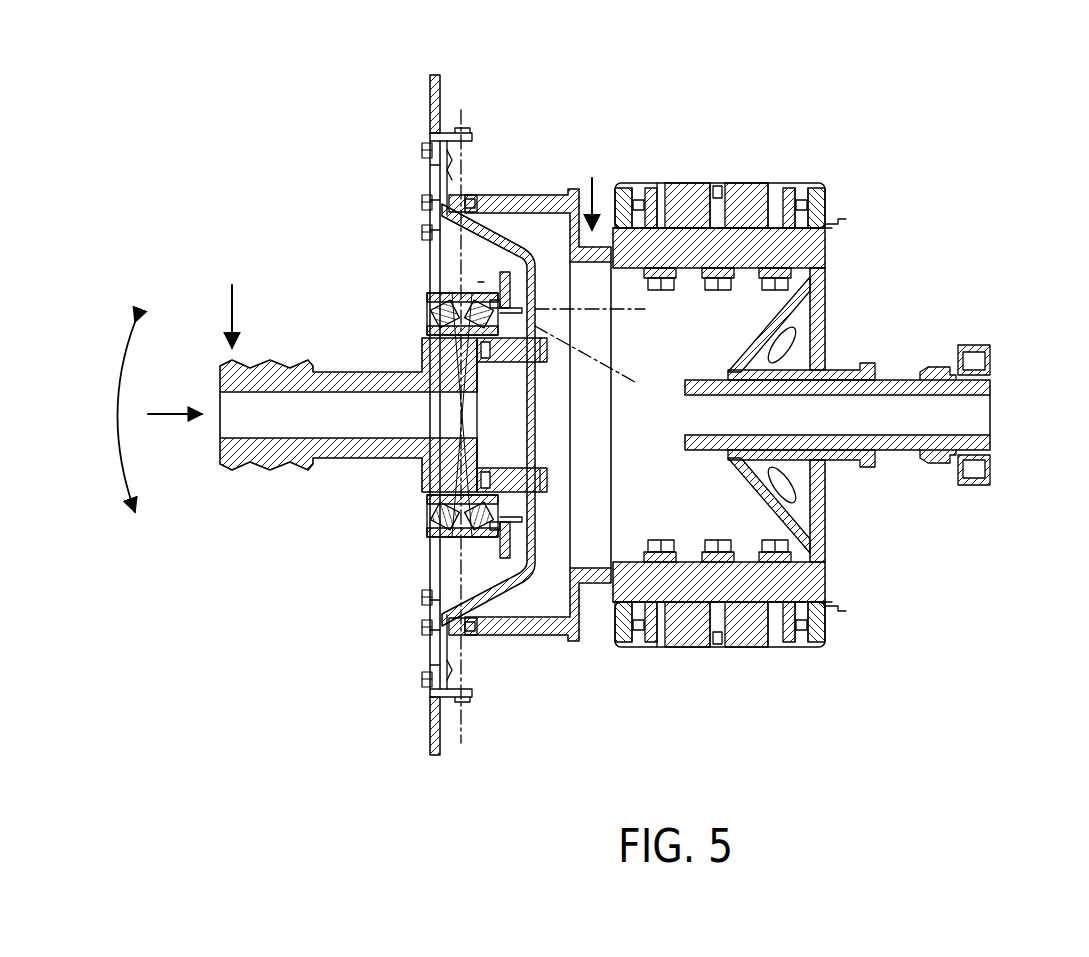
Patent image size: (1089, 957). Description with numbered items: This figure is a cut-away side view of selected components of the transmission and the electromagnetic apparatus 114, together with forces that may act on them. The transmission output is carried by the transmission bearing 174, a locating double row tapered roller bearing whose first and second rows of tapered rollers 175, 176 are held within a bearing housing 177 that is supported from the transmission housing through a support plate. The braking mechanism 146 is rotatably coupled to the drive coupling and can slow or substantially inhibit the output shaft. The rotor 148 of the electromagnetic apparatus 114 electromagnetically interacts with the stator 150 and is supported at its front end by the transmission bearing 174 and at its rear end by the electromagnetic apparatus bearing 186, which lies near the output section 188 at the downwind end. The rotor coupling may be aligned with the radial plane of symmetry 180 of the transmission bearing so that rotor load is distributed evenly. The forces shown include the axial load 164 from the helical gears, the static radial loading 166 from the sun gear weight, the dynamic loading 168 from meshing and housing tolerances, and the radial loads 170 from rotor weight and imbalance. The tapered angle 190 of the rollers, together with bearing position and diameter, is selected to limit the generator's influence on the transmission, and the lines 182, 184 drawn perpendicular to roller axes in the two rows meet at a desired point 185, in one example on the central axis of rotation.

The electromagnetic apparatus 114 is at (733, 93).
The braking mechanism 146 is at (430, 725).
The rotor 148 is at (775, 299).
The stator 150 is at (750, 200).
The axial load 164 is at (163, 413).
The static radial loading 166 is at (233, 305).
The dynamic loading 168 is at (115, 470).
The radial loads 170 is at (597, 181).
The transmission bearing 174 is at (463, 292).
The first row of tapered rollers 175 is at (433, 537).
The second row of tapered rollers 176 is at (522, 568).
The bearing housing 177 is at (481, 272).
The radial line or plane of symmetry 180 is at (463, 738).
The line 182 is at (452, 365).
The line 184 is at (478, 372).
The intersection point 185 is at (461, 414).
The electromagnetic apparatus bearing 186 is at (992, 360).
The output section 188 is at (965, 279).
The tapered angle 190 is at (553, 312).